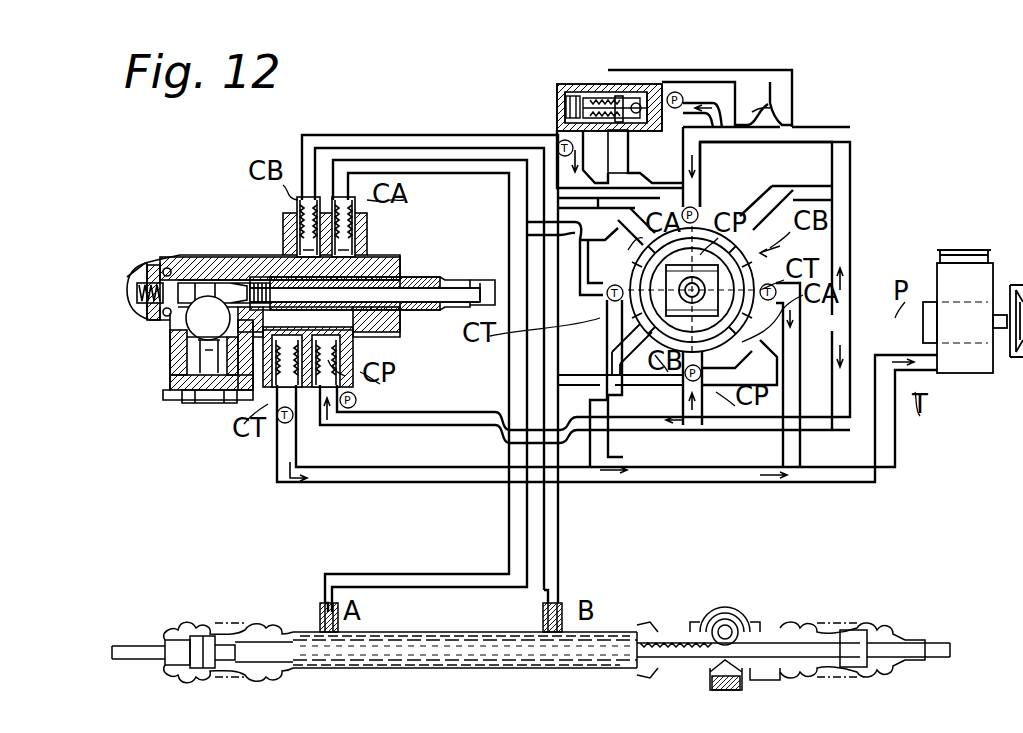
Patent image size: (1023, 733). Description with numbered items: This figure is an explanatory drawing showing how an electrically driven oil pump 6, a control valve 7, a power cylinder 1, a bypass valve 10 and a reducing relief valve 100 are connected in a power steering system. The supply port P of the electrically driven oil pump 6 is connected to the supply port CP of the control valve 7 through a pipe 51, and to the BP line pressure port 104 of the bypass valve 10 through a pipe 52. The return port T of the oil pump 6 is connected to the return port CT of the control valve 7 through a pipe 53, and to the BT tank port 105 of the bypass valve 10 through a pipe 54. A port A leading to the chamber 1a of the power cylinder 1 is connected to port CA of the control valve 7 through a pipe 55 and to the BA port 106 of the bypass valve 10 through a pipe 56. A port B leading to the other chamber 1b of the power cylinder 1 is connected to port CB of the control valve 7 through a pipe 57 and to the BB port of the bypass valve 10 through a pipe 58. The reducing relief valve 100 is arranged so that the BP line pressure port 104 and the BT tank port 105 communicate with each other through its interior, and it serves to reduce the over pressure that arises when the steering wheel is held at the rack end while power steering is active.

The power cylinder 1 is at (266, 610).
The chamber 1a is at (375, 672).
The chamber 1b is at (516, 670).
The electrically driven oil pump 6 is at (978, 280).
The control valve 7 is at (681, 305).
The bypass valve 10 is at (544, 90).
The pipe 51 is at (700, 175).
The pipe 52 is at (758, 82).
The pipe 53 is at (455, 480).
The pipe 54 is at (597, 256).
The pipe 55 is at (462, 172).
The pipe 56 is at (632, 182).
The pipe 57 is at (472, 136).
The pipe 58 is at (795, 84).
The reducing relief valve 100 is at (628, 92).
The BP line pressure port 104 is at (650, 100).
The BT tank port 105 is at (558, 112).
The BA port 106 is at (622, 130).